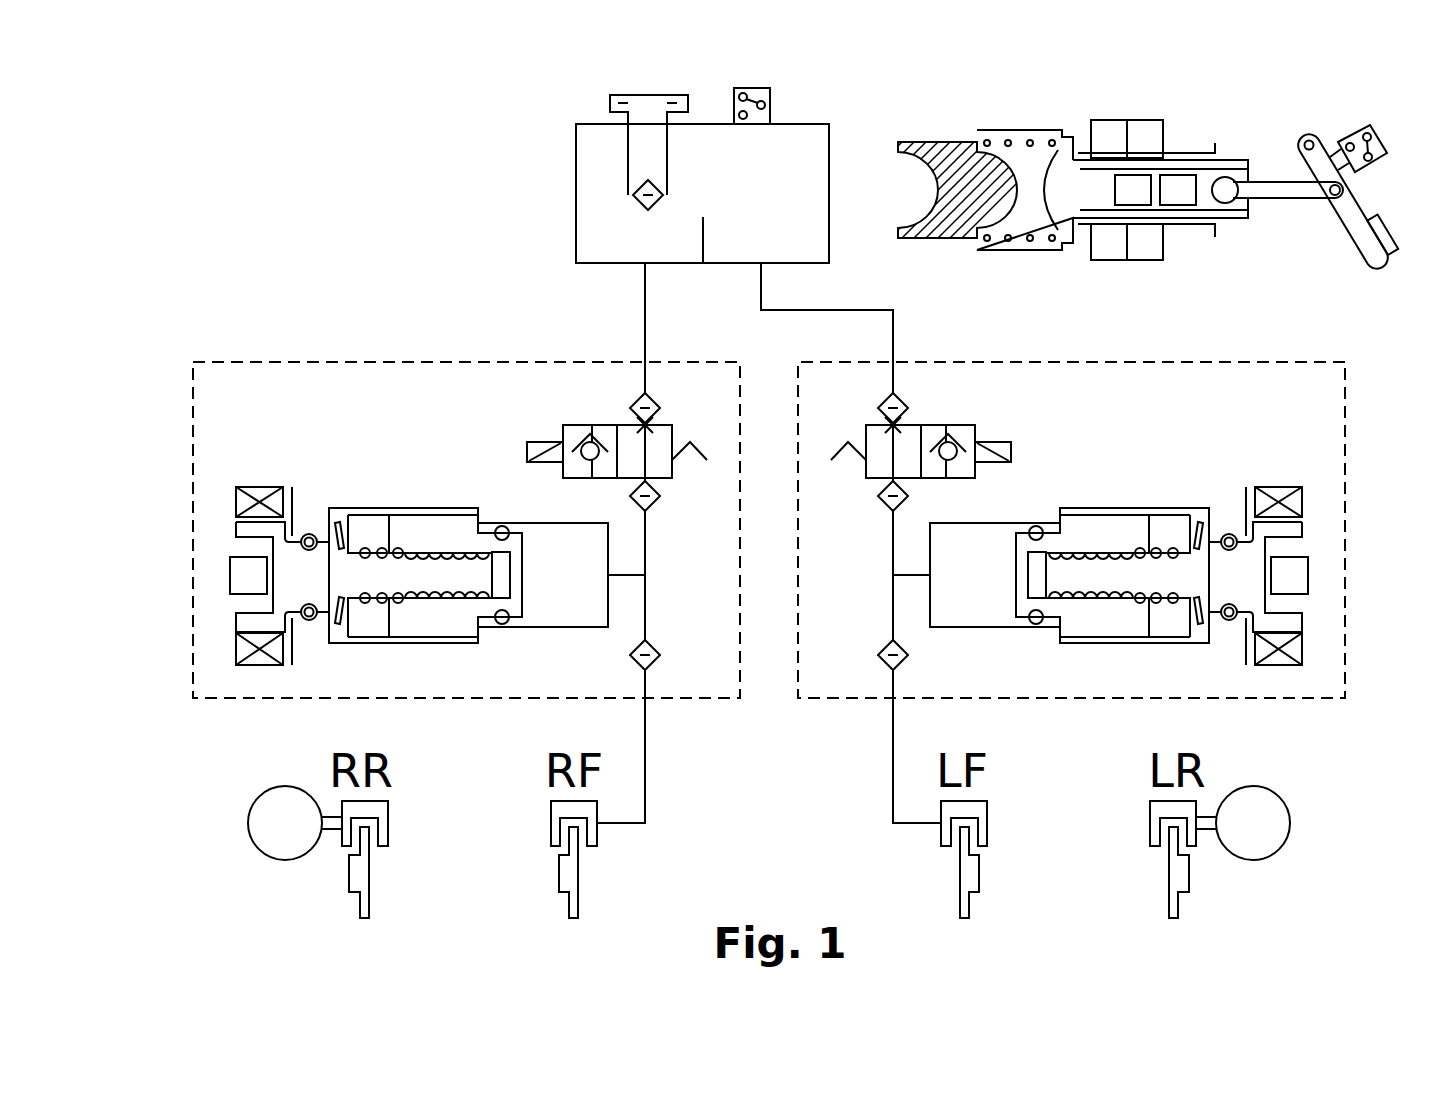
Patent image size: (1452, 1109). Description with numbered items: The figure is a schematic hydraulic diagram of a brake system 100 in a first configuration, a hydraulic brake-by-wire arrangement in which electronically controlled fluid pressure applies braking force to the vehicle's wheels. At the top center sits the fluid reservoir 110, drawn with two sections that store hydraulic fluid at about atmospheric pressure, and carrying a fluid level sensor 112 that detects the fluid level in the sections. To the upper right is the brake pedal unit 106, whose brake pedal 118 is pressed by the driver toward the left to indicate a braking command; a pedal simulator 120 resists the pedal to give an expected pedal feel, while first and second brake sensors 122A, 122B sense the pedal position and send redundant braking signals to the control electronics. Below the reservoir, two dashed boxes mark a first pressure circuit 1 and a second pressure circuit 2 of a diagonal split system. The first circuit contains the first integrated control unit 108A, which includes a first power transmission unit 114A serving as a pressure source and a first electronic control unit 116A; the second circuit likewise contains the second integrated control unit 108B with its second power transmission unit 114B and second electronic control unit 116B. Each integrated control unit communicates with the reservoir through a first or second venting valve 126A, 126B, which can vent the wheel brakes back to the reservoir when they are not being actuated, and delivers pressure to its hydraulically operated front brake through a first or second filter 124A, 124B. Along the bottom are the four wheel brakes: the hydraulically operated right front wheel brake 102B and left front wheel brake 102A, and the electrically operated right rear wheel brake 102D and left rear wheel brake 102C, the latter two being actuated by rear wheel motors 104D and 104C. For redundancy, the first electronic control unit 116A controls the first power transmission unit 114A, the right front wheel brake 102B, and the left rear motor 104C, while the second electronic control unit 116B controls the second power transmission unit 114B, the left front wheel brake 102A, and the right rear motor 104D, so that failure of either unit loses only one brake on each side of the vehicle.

The brake system 100 is at (366, 148).
The fluid reservoir 110 is at (795, 123).
The fluid level sensor 112 is at (754, 88).
The pedal simulator 120 is at (992, 116).
The brake pedal unit 106 is at (1221, 95).
The first brake sensor 122A is at (1138, 106).
The second brake sensor 122B is at (1180, 257).
The brake pedal 118 is at (1314, 121).
The first pressure circuit 1 is at (342, 360).
The second pressure circuit 2 is at (1071, 507).
The first filter 124A is at (655, 643).
The second filter 124B is at (952, 663).
The first venting valve 126A is at (582, 425).
The second venting valve 126B is at (964, 437).
The first integrated control unit 108A is at (352, 474).
The second integrated control unit 108B is at (1088, 520).
The first power transmission unit 114A is at (398, 656).
The second power transmission unit 114B is at (1117, 600).
The first electronic control unit 116A is at (216, 534).
The second electronic control unit 116B is at (1325, 576).
The left front wheel brake 102A is at (1010, 829).
The right front wheel brake 102B is at (551, 808).
The left rear wheel brake 102C is at (1231, 822).
The right rear wheel brake 102D is at (342, 800).
The left rear wheel motor 104C is at (1291, 842).
The right rear wheel motor 104D is at (250, 834).